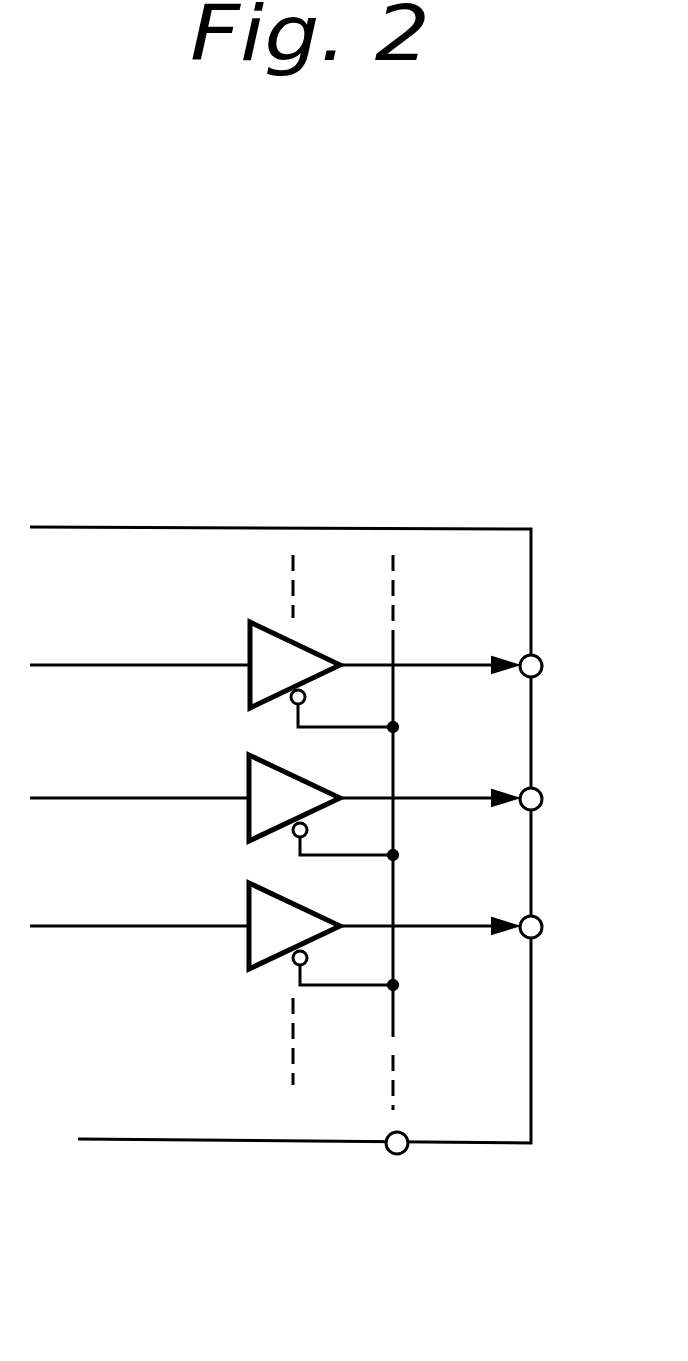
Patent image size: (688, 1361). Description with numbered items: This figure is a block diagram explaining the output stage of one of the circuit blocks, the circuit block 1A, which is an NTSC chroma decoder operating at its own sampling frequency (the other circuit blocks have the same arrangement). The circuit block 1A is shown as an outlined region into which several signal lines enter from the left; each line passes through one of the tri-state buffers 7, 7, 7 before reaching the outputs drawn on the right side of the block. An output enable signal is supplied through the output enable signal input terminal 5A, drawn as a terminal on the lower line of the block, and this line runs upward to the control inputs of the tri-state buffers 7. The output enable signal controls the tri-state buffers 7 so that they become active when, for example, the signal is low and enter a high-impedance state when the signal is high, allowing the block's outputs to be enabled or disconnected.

The circuit block 1A is at (348, 527).
The tri-state buffer 7 is at (245, 639).
The output enable signal input terminal 5A is at (397, 1155).